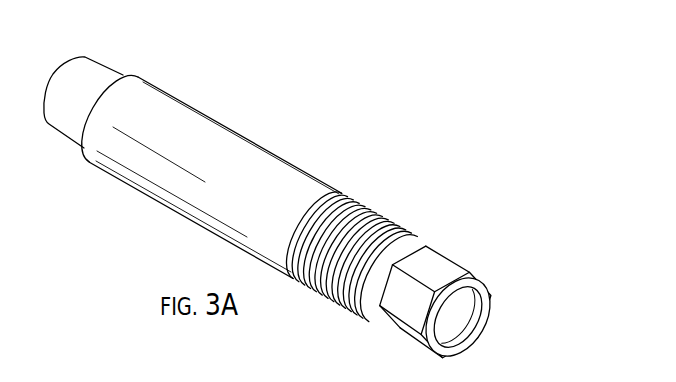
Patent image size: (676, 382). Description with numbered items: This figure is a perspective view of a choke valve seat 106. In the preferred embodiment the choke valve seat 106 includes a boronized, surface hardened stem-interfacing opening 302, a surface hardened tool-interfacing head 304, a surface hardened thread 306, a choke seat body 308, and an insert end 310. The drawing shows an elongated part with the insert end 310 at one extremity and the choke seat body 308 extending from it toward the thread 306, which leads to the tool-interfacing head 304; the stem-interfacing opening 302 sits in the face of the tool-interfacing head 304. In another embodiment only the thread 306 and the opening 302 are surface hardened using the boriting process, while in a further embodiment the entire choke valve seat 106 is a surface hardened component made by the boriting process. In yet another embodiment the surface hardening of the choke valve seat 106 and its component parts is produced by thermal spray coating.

The choke valve seat 106 is at (303, 188).
The stem-interfacing opening 302 is at (472, 311).
The tool-interfacing head 304 is at (448, 272).
The thread 306 is at (396, 216).
The choke seat body 308 is at (168, 110).
The insert end 310 is at (92, 72).